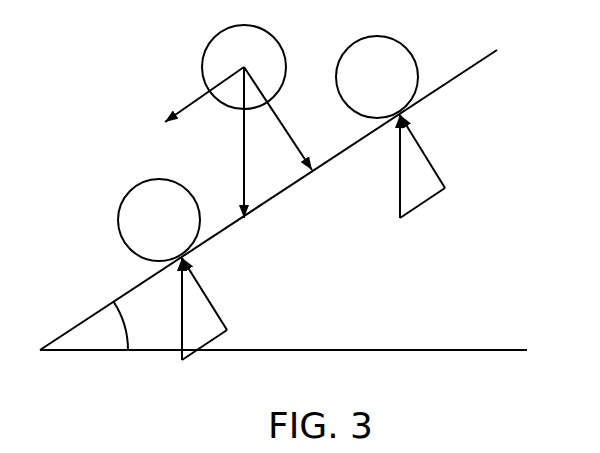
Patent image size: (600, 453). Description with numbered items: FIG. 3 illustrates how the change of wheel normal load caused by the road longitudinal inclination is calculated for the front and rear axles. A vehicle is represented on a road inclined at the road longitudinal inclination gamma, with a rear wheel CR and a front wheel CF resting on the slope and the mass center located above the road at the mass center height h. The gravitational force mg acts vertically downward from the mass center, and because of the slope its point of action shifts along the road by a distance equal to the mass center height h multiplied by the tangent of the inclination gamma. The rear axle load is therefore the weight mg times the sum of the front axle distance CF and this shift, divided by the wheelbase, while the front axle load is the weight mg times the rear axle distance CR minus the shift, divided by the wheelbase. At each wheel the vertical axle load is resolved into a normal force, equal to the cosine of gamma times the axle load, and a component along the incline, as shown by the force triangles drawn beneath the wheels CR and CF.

The road longitudinal inclination gamma is at (110, 326).
The gravitational force mg is at (222, 142).
The mass center height h is at (278, 118).
The rear axle to mass center distance CR is at (174, 220).
The front axle to mass center distance CF is at (374, 89).